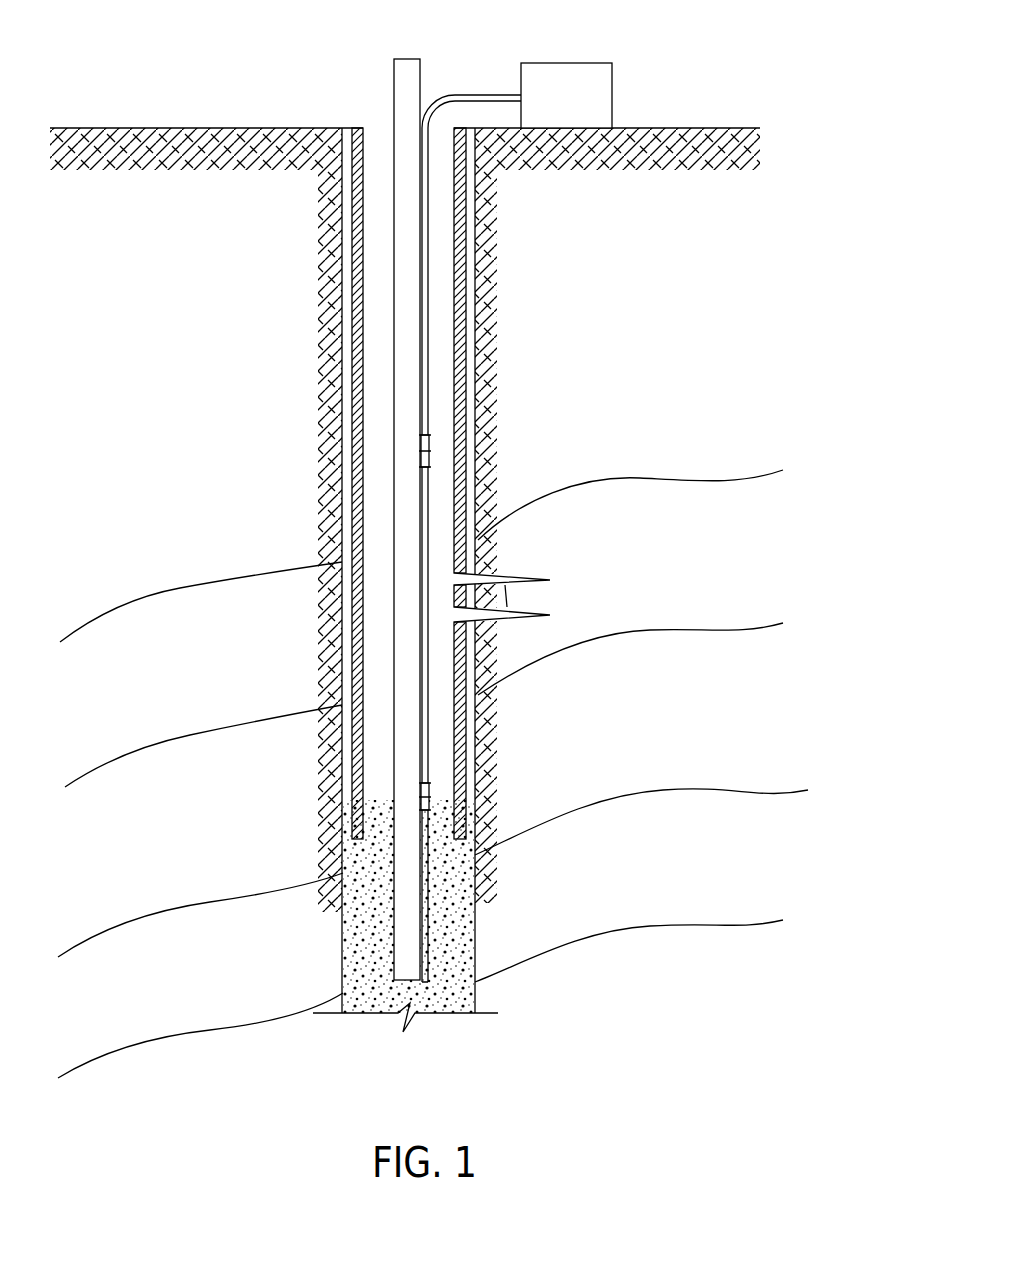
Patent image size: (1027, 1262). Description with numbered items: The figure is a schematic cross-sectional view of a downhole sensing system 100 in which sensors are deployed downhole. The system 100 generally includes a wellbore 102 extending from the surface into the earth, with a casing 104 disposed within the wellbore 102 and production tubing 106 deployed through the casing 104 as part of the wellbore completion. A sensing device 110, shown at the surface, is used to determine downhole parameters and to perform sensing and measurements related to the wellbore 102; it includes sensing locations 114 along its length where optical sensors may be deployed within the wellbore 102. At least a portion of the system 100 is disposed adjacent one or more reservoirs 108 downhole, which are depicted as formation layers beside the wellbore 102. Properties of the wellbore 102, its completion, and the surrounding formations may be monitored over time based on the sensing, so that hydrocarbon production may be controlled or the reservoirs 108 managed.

The downhole sensing system 100 is at (180, 70).
The wellbore 102 is at (210, 482).
The casing 104 is at (429, 438).
The production tubing 106 is at (394, 327).
The reservoirs 108 is at (754, 560).
The sensing device 110 is at (585, 108).
The sensing locations 114 is at (428, 450).